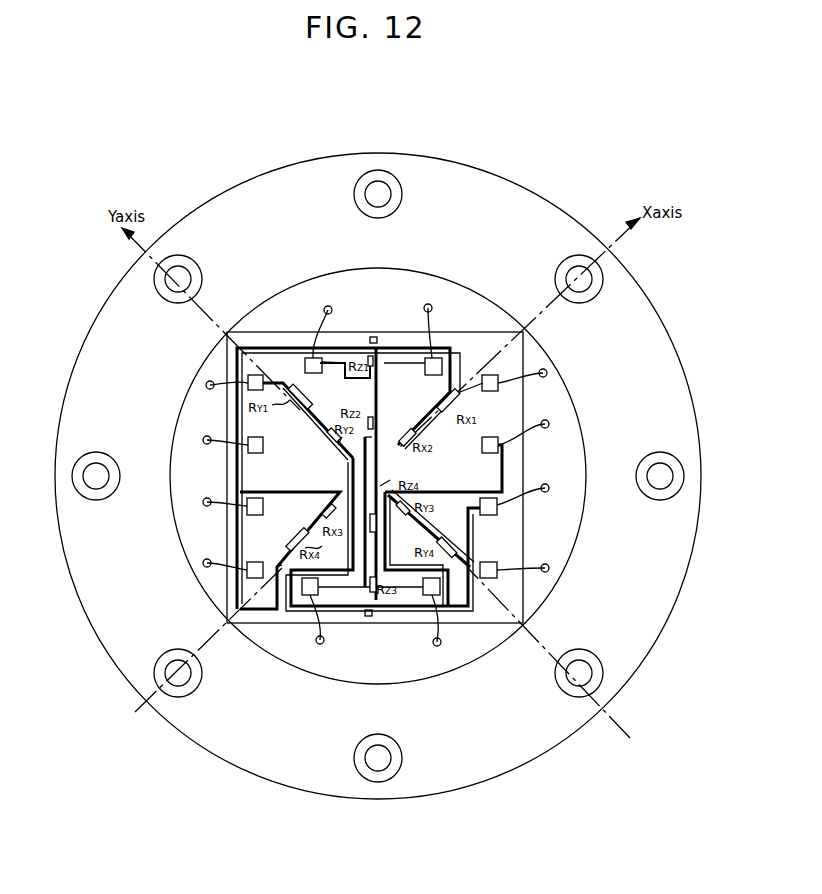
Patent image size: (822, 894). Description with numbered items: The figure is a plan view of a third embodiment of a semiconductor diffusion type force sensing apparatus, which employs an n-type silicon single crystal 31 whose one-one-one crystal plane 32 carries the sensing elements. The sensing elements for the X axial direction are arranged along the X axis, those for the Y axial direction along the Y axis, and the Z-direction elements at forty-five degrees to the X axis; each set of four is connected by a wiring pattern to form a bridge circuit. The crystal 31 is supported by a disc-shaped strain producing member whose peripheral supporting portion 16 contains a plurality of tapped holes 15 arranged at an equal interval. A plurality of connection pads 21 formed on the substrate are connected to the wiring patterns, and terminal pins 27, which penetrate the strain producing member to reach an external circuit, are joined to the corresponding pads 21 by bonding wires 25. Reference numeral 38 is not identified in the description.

The tapped hole 15 is at (583, 283).
The supporting portion 16 is at (107, 593).
The connection pad 21 is at (497, 512).
The bonding wire 25 is at (490, 445).
The terminal pin 27 is at (545, 424).
The n-type silicon single crystal 31 is at (503, 330).
The {111} plane 32 is at (470, 345).
The strain gauge 38 is at (307, 428).